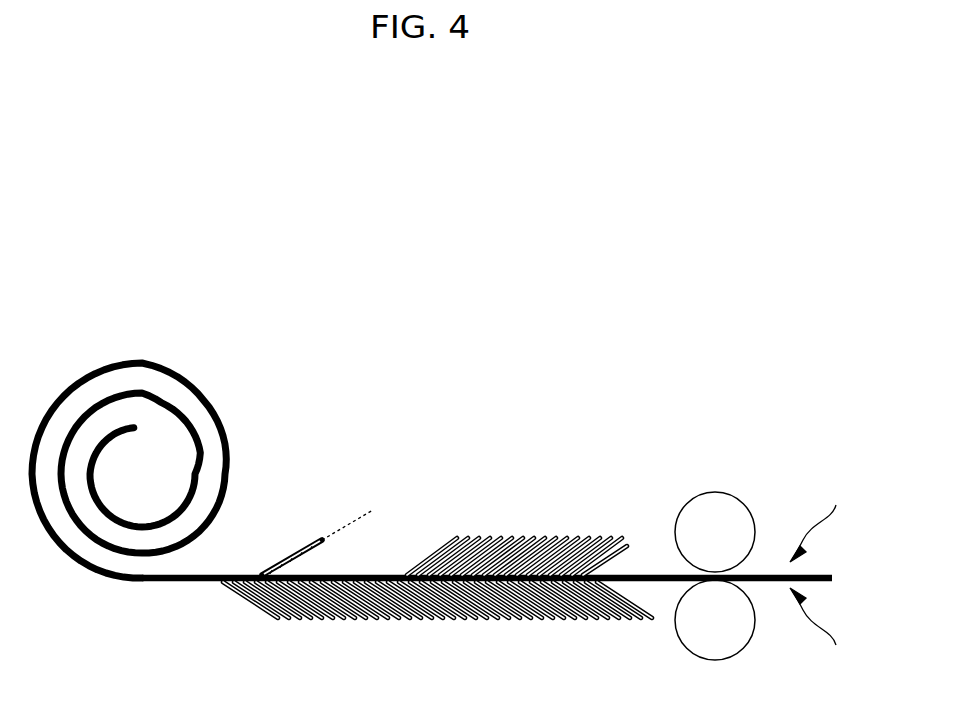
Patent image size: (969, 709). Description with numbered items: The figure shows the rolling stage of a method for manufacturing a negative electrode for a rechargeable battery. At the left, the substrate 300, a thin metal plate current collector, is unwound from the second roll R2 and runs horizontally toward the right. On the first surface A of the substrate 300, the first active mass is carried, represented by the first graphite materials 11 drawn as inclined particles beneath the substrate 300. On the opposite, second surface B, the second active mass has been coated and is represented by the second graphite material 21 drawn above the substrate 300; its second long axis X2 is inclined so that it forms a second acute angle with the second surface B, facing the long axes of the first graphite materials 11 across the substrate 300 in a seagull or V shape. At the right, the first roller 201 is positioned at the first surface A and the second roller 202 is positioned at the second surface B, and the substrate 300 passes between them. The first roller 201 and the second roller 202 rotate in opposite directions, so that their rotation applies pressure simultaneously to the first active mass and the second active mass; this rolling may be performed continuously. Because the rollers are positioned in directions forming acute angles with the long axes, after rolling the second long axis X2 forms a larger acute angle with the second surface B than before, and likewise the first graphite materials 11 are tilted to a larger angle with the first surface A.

The second roll R2 is at (128, 483).
The substrate 300 is at (180, 583).
The first graphite materials 11 is at (460, 618).
The second graphite material 21 is at (293, 575).
The second long axis X2 is at (363, 512).
The second roller 202 is at (715, 532).
The first roller 201 is at (715, 620).
The first surface A is at (818, 636).
The second surface B is at (818, 516).